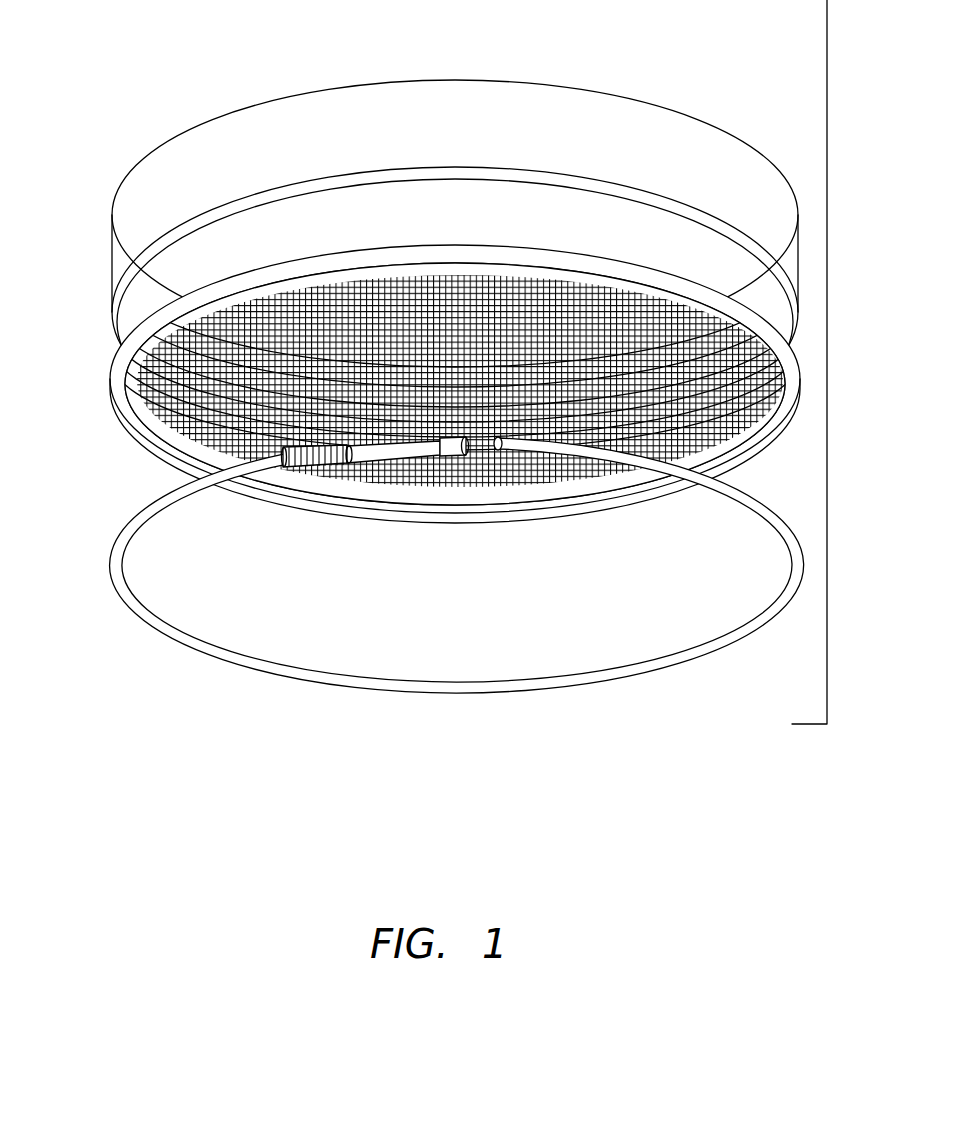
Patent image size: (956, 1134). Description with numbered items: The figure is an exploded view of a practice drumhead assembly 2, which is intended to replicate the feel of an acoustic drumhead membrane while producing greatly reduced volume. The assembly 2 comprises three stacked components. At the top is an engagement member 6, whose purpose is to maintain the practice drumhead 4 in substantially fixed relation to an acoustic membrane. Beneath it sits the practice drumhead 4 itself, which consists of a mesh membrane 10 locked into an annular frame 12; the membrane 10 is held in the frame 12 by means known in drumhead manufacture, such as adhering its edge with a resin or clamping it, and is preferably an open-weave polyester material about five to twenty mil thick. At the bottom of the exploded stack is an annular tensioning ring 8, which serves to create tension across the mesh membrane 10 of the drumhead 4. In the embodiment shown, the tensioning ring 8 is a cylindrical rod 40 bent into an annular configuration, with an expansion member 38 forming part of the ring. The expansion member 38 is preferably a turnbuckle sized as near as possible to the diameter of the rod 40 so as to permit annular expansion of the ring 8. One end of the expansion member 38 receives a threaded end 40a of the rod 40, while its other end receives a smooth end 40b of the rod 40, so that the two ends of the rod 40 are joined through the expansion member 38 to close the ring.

The practice drumhead assembly 2 is at (838, 280).
The practice drumhead 4 is at (421, 273).
The engagement member 6 is at (97, 259).
The annular tensioning ring 8 is at (423, 589).
The mesh membrane 10 is at (432, 305).
The annular frame 12 is at (583, 262).
The expansion member 38 is at (418, 463).
The cylindrical rod 40 is at (298, 688).
The threaded end 40a is at (323, 468).
The smooth end 40b is at (525, 446).